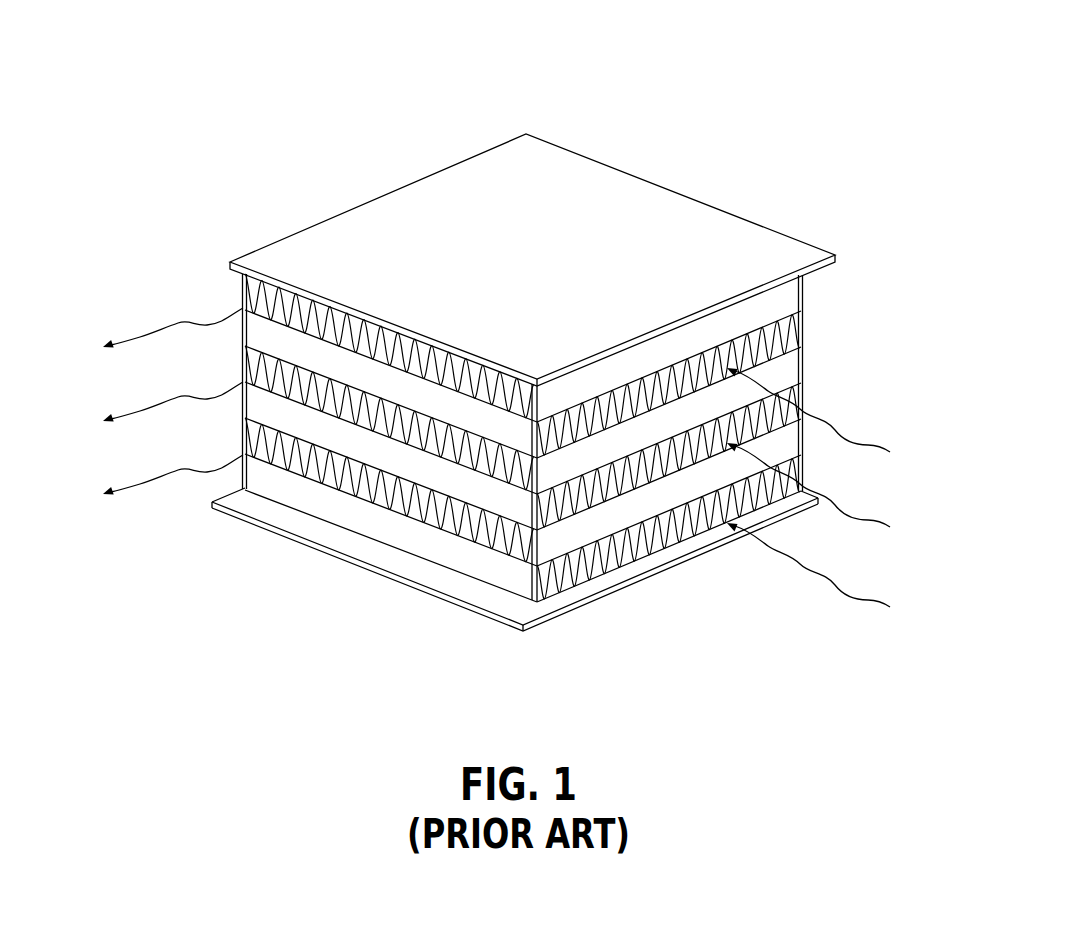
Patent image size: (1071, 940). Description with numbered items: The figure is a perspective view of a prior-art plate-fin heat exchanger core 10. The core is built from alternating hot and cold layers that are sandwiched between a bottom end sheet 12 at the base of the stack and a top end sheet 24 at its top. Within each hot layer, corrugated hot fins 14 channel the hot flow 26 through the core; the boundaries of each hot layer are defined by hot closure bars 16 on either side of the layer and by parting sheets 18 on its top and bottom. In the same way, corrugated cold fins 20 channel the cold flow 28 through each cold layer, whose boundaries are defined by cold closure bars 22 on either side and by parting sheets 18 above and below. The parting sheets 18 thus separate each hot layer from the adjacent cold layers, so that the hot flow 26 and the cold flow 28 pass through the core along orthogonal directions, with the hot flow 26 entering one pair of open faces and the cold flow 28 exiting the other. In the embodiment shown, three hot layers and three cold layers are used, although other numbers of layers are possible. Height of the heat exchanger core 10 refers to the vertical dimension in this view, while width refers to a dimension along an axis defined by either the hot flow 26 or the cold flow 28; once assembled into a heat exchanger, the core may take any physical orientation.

The heat exchanger core 10 is at (634, 76).
The bottom end sheet 12 is at (482, 597).
The hot fins 14 is at (583, 573).
The hot closure bars 16 is at (417, 545).
The parting sheets 18 is at (303, 483).
The cold fins 20 is at (370, 490).
The cold closure bars 22 is at (637, 515).
The top end sheet 24 is at (293, 258).
The hot flow 26 is at (837, 487).
The cold flow 28 is at (135, 401).